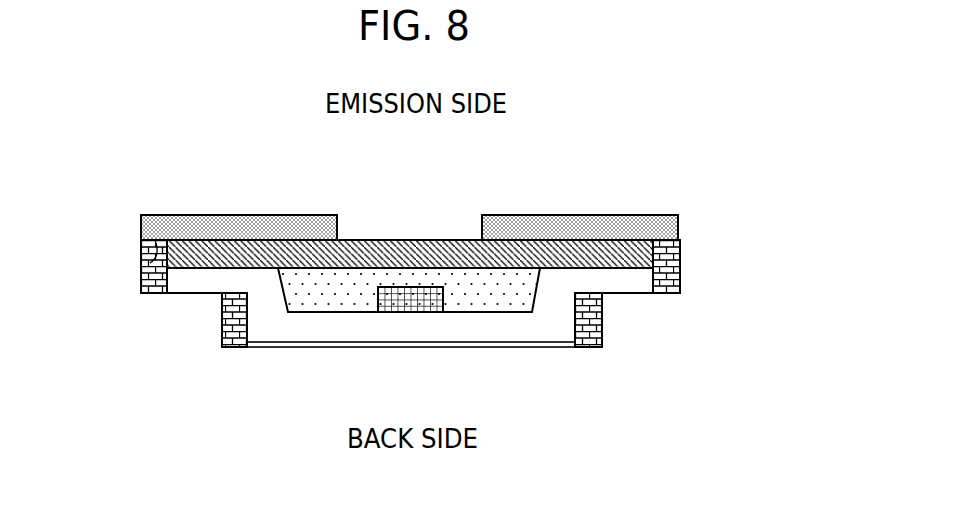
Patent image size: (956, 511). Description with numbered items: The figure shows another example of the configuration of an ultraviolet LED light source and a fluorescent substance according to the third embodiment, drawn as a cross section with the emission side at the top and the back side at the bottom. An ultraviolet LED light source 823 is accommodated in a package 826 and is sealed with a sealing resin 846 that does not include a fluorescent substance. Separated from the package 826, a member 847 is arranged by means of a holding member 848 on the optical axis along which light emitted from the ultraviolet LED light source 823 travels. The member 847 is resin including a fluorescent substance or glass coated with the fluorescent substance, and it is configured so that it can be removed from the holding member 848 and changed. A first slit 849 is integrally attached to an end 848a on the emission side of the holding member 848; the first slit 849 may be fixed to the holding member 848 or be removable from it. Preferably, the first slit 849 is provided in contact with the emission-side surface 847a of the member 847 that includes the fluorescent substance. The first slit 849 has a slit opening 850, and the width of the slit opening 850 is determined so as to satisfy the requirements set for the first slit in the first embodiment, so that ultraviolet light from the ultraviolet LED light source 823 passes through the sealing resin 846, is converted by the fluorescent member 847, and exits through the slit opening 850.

The first slit 849 is at (238, 214).
The member 847 is at (442, 238).
The surface of translucent substrate 847a is at (353, 238).
The slit opening 850 is at (380, 230).
The holding member 848 is at (680, 252).
The end on the emission side of the holding member 848a is at (150, 263).
The sealing resin 846 is at (473, 290).
The ultraviolet LED light source 823 is at (400, 313).
The package 826 is at (557, 332).